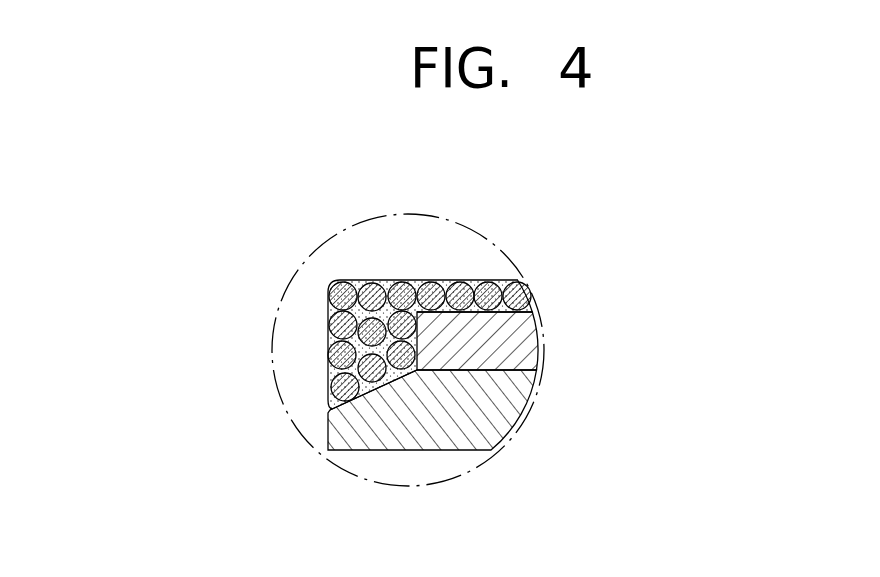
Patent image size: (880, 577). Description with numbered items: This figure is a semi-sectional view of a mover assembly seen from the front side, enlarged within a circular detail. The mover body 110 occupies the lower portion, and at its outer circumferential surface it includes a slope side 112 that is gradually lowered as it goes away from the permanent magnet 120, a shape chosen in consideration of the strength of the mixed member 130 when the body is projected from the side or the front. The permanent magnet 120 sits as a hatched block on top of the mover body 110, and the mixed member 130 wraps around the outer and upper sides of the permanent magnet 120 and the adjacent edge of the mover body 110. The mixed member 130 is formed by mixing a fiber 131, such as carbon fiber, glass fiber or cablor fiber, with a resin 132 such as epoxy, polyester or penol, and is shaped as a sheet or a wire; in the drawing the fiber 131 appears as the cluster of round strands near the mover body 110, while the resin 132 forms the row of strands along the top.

The mover body 110 is at (330, 430).
The slope side 112 is at (335, 406).
The permanent magnet 120 is at (537, 338).
The mixed member 130 is at (332, 345).
The fiber 131 is at (327, 352).
The resin 132 is at (327, 307).